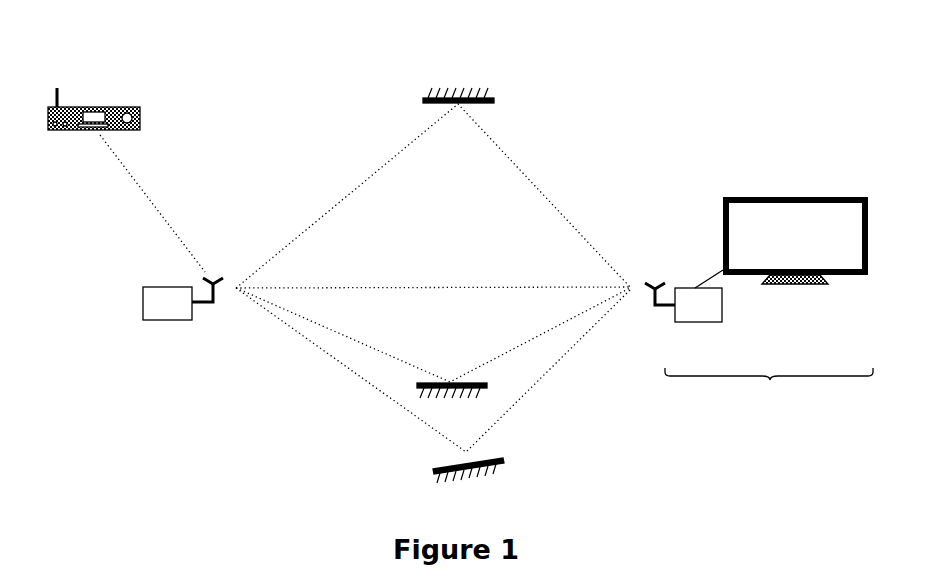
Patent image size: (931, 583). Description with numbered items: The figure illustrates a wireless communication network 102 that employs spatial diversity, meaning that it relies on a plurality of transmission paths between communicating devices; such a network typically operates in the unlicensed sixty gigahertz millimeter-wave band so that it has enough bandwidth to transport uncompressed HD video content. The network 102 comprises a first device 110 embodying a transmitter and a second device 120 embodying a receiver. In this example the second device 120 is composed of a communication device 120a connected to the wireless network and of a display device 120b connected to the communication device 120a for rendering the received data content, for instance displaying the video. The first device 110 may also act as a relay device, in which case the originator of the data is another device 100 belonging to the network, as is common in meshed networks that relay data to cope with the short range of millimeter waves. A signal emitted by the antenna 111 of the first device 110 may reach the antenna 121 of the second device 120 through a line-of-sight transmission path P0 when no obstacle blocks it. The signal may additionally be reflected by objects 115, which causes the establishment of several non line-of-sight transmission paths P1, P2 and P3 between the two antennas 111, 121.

The another device 100 is at (114, 107).
The wireless communication network 102 is at (302, 103).
The first device 110 is at (143, 300).
The antenna 111 is at (213, 320).
The objects 115 is at (462, 88).
The second device 120 is at (755, 276).
The communication device 120a is at (723, 307).
The display device 120b is at (760, 197).
The antenna 121 is at (652, 284).
The line-of-sight transmission path P0 is at (480, 284).
The non line-of-sight transmission path P1 is at (372, 176).
The non line-of-sight transmission path P2 is at (518, 346).
The non line-of-sight transmission path P3 is at (366, 382).